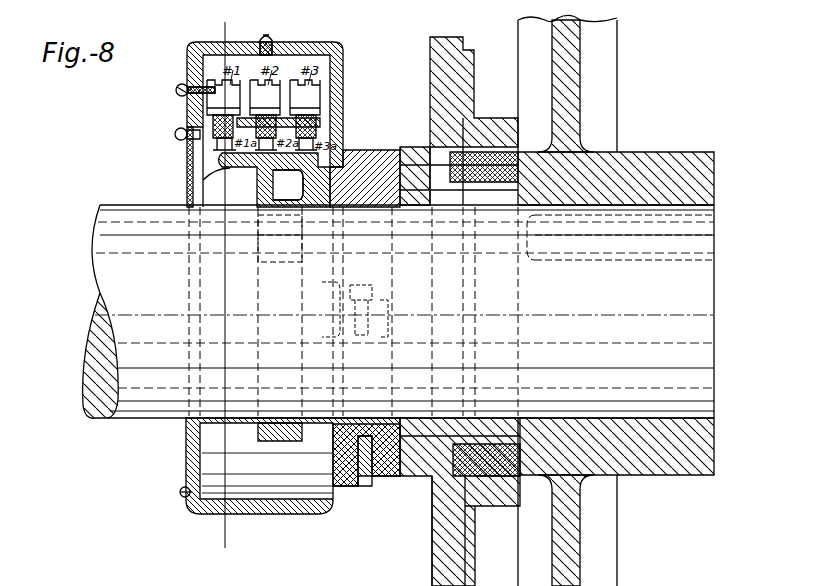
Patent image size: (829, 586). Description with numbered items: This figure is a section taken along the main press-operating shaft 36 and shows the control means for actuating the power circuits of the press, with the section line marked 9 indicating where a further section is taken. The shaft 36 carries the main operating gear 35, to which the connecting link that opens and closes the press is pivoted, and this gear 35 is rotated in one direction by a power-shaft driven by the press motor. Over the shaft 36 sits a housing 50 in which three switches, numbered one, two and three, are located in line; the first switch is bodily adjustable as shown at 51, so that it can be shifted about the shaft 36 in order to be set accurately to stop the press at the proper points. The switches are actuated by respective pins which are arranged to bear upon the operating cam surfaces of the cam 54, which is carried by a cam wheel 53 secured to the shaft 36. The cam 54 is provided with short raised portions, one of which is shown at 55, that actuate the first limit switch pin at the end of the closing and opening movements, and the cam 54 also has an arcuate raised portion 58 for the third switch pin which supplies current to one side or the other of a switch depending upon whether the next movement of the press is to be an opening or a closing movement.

The section line 9- 9 is at (238, 18).
The main operating gear 35 is at (608, 52).
The shaft 36 is at (697, 378).
The housing 50 is at (335, 108).
The bodily adjustable mounting 51 is at (178, 99).
The cam wheel 53 is at (284, 441).
The cam 54 is at (203, 180).
The short raised portion 55 is at (192, 157).
The arcuate raised portion 58 is at (340, 170).